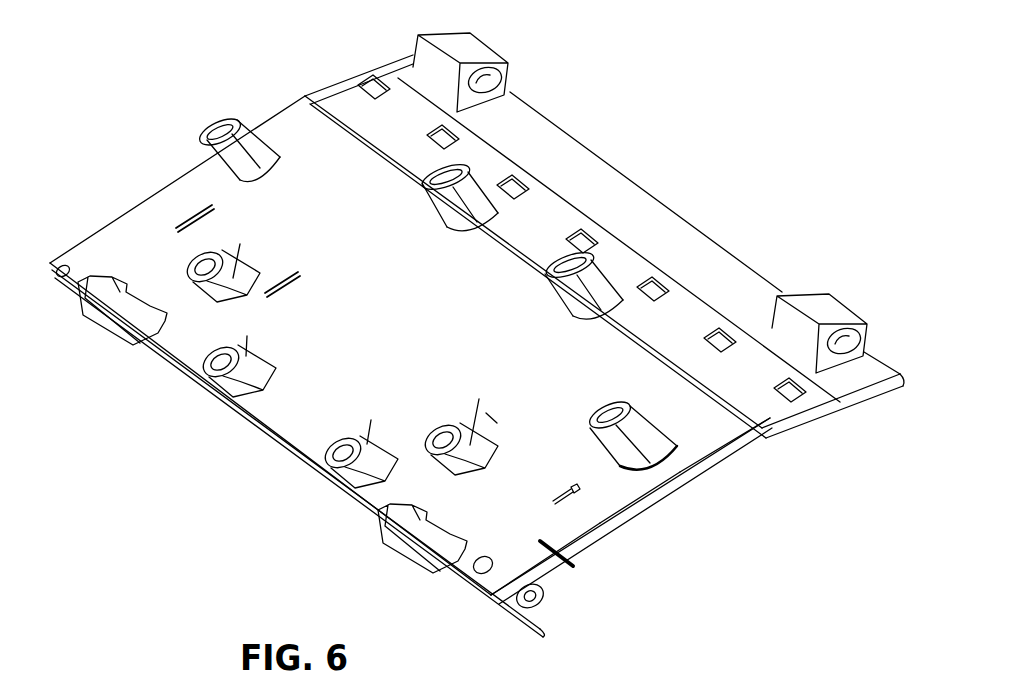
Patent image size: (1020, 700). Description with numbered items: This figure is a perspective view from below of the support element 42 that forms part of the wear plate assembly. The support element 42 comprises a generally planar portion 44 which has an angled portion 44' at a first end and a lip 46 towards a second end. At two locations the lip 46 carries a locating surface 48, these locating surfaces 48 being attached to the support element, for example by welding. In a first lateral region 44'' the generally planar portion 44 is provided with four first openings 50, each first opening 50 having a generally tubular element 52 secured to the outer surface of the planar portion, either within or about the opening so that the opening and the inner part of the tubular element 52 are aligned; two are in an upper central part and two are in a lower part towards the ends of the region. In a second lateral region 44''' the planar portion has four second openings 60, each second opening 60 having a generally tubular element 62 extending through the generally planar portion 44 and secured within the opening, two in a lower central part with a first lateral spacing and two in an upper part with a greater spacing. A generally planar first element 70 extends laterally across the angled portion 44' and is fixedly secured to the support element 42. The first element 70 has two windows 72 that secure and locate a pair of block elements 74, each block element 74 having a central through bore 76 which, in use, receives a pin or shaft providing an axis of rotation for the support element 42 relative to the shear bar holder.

The support element 42 is at (786, 98).
The generally planar portion 44 is at (411, 349).
The angled portion 44' is at (777, 446).
The first lateral region 44'' is at (698, 486).
The second lateral region 44''' is at (577, 566).
The lip 46 is at (517, 626).
The locating surface 48 is at (90, 311).
The first opening 50 is at (278, 168).
The generally tubular element 52 is at (253, 128).
The second opening 60 is at (262, 277).
The generally tubular element 62 is at (378, 354).
The first element 70 is at (683, 232).
The window 72 is at (792, 693).
The block element 74 is at (490, 60).
The central through bore 76 is at (513, 88).